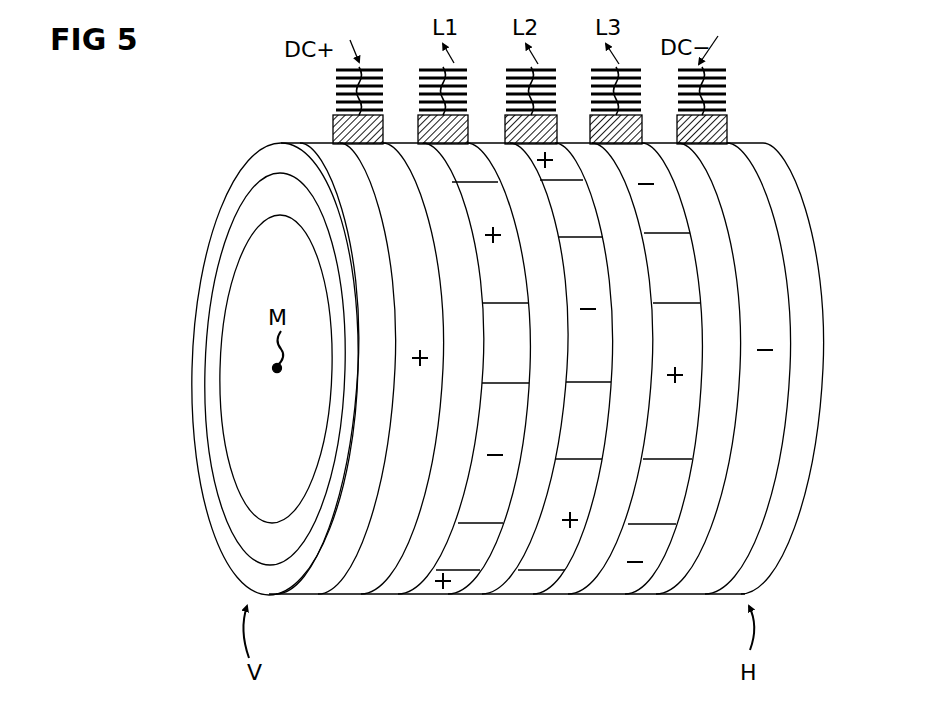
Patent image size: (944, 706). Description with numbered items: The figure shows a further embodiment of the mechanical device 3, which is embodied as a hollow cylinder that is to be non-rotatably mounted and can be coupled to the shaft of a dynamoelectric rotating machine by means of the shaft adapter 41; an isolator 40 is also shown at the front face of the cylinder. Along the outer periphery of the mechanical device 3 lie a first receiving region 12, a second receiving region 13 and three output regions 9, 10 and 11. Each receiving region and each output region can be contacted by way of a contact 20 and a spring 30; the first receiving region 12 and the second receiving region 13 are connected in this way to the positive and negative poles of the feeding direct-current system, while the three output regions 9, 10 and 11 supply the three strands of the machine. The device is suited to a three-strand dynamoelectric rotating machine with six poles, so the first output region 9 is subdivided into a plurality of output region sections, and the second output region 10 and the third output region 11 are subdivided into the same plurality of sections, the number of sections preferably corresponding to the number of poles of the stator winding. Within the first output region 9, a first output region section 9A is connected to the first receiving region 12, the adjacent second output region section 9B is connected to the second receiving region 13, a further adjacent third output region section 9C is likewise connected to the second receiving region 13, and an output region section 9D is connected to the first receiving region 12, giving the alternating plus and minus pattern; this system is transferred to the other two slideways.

The mechanical device 3 is at (845, 143).
The first output region 9 is at (459, 367).
The first output region section 9A is at (516, 290).
The second output region section 9B is at (519, 428).
The third output region section 9C is at (417, 142).
The output region section 9D is at (470, 594).
The second output region 10 is at (533, 601).
The third output region 11 is at (625, 601).
The first receiving region 12 is at (347, 594).
The second receiving region 13 is at (695, 594).
The contact 20 is at (727, 128).
The spring 30 is at (727, 92).
The isolator 40 is at (210, 272).
The shaft adapter 41 is at (220, 315).